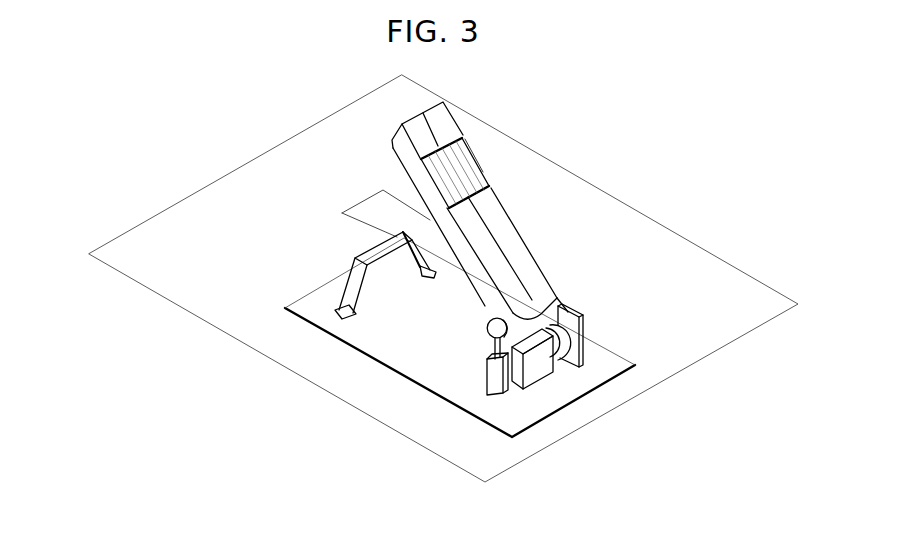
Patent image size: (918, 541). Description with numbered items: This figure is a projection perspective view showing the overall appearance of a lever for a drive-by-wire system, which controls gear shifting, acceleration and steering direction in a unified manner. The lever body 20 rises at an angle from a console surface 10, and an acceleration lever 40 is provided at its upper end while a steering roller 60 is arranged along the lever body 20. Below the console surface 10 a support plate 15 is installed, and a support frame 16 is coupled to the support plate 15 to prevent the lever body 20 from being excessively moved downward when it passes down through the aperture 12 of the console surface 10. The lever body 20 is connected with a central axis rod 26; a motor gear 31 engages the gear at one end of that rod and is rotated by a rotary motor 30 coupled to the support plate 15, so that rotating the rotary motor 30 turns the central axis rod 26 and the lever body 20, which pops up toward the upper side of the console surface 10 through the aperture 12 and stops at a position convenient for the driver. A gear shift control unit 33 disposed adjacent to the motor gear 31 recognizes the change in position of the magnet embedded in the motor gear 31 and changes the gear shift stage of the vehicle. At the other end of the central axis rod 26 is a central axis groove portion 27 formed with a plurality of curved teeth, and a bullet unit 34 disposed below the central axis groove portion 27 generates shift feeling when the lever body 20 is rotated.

The console surface 10 is at (185, 235).
The aperture 12 is at (367, 223).
The support plate 15 is at (372, 333).
The support frame 16 is at (356, 286).
The lever body 20 is at (527, 223).
The central axis rod 26 is at (541, 371).
The central axis groove portion 27 is at (494, 331).
The rotary motor 30 is at (545, 366).
The motor gear 31 is at (562, 345).
The gear shift control unit 33 is at (573, 326).
The bullet unit 34 is at (482, 400).
The acceleration lever 40 is at (390, 163).
The steering roller 60 is at (480, 149).